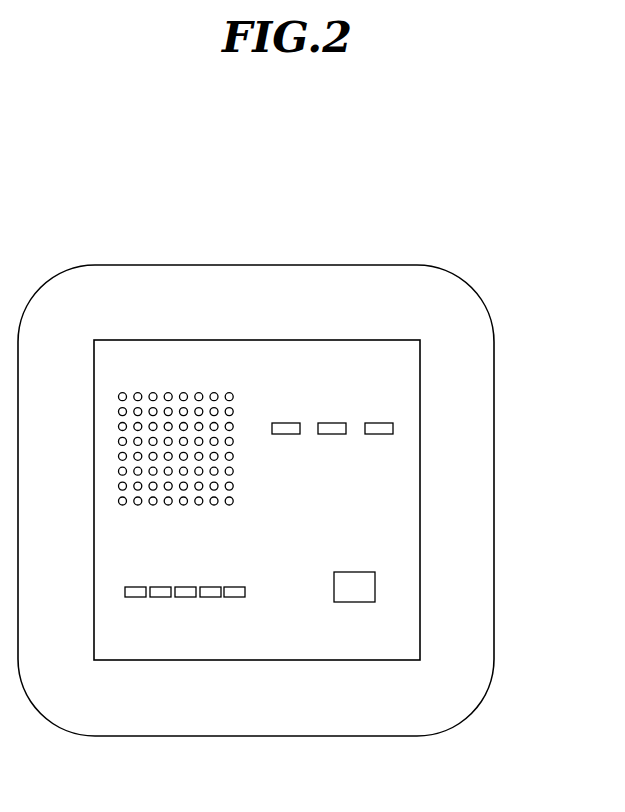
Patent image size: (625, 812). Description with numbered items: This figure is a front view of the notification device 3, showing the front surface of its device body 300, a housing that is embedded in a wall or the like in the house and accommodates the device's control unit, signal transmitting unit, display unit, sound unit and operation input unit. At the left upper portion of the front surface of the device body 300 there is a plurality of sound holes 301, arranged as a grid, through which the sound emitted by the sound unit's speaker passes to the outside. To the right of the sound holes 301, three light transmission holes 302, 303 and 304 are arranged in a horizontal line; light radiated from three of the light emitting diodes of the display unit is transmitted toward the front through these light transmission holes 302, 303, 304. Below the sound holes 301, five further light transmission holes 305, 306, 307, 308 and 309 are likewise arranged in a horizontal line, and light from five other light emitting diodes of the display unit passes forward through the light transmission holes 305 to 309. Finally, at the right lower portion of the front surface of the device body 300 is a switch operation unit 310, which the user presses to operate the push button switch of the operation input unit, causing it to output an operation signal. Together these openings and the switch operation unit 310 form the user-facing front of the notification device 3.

The notification device 3 is at (73, 268).
The device body 300 is at (483, 291).
The sound holes 301 is at (181, 500).
The light transmission hole 302 is at (287, 422).
The light transmission hole 303 is at (334, 422).
The light transmission hole 304 is at (380, 422).
The light transmission hole 305 is at (138, 586).
The light transmission hole 306 is at (162, 598).
The light transmission hole 307 is at (188, 586).
The light transmission hole 308 is at (210, 598).
The light transmission hole 309 is at (235, 586).
The switch operation unit 310 is at (360, 571).